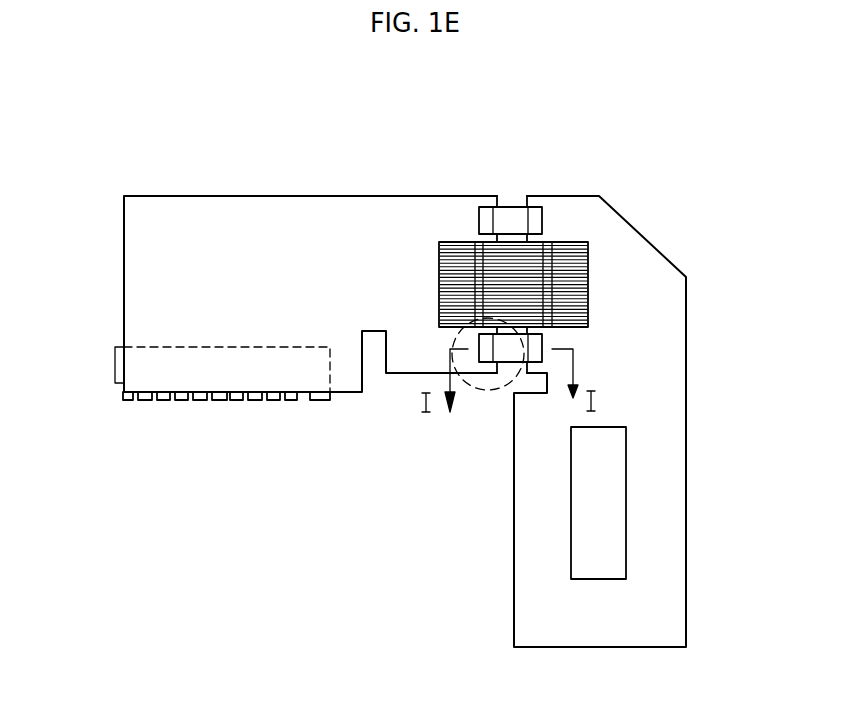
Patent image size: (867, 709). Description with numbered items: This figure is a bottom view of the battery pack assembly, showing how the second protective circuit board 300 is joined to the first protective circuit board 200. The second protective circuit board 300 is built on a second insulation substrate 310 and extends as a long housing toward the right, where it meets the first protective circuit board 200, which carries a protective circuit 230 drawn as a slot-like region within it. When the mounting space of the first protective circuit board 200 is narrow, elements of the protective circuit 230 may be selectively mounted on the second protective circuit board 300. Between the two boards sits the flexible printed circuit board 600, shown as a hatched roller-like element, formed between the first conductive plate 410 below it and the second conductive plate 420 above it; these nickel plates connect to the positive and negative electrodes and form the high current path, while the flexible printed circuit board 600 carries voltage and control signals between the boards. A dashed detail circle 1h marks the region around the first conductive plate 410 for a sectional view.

The second protective circuit board 300 is at (268, 196).
The second insulation substrate 310 is at (147, 298).
The first protective circuit board 200 is at (695, 473).
The protective circuit 230 is at (585, 532).
The second conductive plate 420 is at (515, 199).
The first conductive plate 410 is at (507, 359).
The flexible printed circuit board 600 is at (575, 233).
The detail region 1h is at (480, 388).